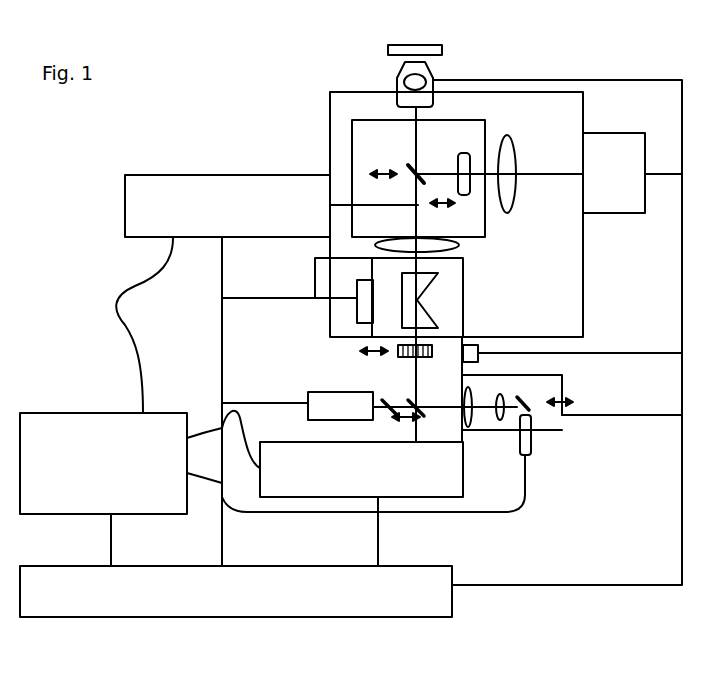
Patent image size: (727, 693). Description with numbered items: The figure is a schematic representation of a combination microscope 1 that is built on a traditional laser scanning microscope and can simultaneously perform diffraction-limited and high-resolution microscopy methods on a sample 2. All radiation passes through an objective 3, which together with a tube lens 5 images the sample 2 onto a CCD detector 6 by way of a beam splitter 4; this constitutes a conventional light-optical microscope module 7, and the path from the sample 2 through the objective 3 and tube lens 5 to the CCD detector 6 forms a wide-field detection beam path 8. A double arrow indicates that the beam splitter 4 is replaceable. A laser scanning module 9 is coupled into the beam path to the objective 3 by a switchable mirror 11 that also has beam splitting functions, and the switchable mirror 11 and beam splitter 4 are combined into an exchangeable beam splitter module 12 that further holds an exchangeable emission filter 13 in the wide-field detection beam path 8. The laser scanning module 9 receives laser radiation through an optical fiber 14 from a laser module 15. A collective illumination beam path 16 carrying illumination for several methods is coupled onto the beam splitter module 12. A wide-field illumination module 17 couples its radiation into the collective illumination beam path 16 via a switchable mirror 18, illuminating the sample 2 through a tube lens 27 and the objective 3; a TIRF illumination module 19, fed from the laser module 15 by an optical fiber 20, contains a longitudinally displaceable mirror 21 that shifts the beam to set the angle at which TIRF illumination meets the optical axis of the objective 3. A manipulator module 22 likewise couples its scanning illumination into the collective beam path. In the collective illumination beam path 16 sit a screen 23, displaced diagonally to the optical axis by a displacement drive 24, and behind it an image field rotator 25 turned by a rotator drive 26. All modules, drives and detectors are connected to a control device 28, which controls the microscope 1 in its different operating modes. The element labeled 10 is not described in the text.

The microscope 1 is at (262, 72).
The sample 2 is at (390, 48).
The objective 3 is at (434, 70).
The beam splitter 4 is at (406, 179).
The tube lens 5 is at (515, 200).
The CCD detector 6 is at (602, 132).
The light-optical microscope module 7 is at (330, 132).
The wide-field detection beam path 8 is at (518, 172).
The laser scanning module 9 is at (158, 175).
The mount 10 is at (343, 205).
The switchable mirror 11 is at (414, 206).
The beam splitter module 12 is at (487, 237).
The emission filter 13 is at (457, 162).
The optical fiber 14 is at (136, 352).
The laser module 15 is at (27, 412).
The collective illumination beam path 16 is at (419, 236).
The wide-field illumination module 17 is at (322, 392).
The switchable mirror 18 is at (384, 402).
The TIRF illumination module 19 is at (547, 432).
The optical fiber 20 is at (505, 503).
The mirror 21 is at (529, 409).
The manipulator module 22 is at (325, 497).
The screen 23 is at (432, 358).
The displacement drive 24 is at (478, 357).
The image field rotator 25 is at (439, 322).
The rotator drive 26 is at (357, 318).
The tube lens 27 is at (364, 250).
The control device 28 is at (452, 617).